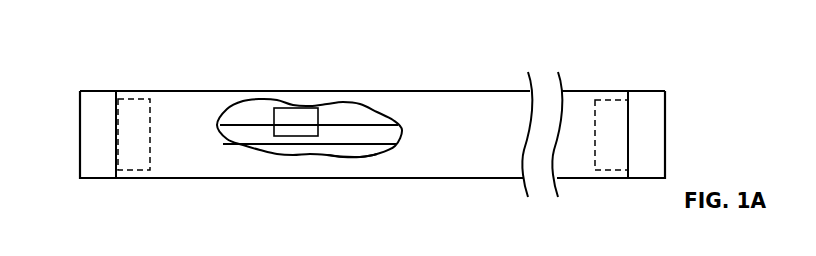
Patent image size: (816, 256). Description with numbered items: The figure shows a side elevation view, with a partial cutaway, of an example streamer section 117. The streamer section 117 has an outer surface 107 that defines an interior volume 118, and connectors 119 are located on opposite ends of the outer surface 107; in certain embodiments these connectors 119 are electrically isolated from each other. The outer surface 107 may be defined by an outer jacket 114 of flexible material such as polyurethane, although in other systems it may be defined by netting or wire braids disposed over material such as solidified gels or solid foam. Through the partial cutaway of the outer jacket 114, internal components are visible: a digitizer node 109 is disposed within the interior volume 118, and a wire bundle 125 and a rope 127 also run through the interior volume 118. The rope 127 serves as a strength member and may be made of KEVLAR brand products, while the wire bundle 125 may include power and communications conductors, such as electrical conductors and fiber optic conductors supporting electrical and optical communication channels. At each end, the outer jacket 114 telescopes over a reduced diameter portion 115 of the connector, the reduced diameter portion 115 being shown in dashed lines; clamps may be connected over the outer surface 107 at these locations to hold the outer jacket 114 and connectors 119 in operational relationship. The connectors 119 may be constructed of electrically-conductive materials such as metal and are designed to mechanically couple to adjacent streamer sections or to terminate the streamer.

The outer surface 107 is at (478, 144).
The digitizer node 109 is at (314, 134).
The outer jacket 114 is at (405, 90).
The reduced diameter portion 115 is at (133, 99).
The streamer section 117 is at (126, 46).
The interior volume 118 is at (357, 152).
The connector 119 is at (89, 81).
The wire bundle 125 is at (333, 123).
The rope 127 is at (298, 146).